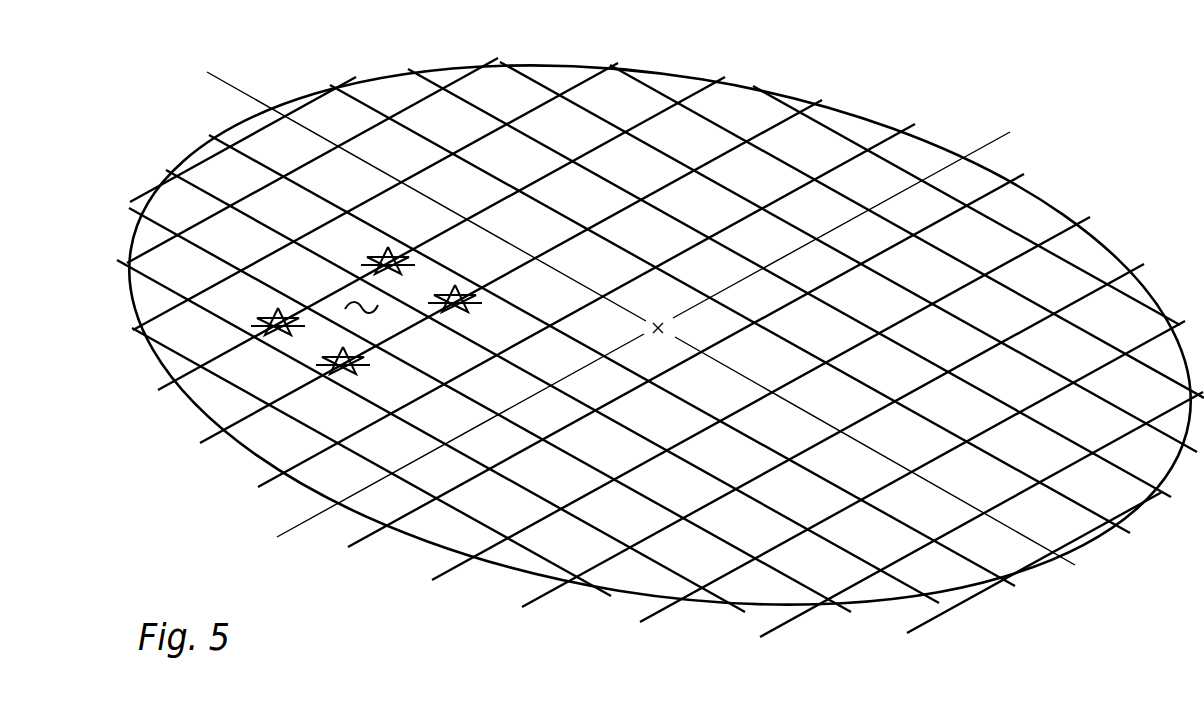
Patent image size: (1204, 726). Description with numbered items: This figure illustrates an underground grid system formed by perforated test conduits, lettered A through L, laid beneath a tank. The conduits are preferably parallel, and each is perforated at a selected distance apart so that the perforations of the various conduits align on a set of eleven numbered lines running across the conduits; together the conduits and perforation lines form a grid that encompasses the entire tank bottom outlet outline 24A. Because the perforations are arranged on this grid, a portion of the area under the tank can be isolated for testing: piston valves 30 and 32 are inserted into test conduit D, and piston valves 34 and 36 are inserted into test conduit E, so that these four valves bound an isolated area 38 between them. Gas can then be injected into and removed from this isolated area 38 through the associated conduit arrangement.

The tank bottom outlet outline 24A is at (752, 90).
The piston valve 30 is at (266, 314).
The piston valve 32 is at (383, 264).
The piston valve 34 is at (347, 366).
The piston valve 36 is at (466, 306).
The isolated area 38 is at (360, 302).